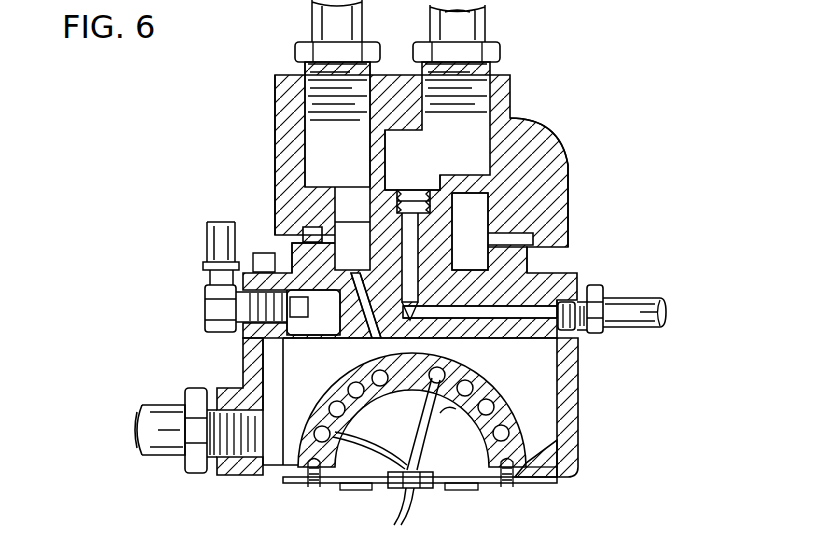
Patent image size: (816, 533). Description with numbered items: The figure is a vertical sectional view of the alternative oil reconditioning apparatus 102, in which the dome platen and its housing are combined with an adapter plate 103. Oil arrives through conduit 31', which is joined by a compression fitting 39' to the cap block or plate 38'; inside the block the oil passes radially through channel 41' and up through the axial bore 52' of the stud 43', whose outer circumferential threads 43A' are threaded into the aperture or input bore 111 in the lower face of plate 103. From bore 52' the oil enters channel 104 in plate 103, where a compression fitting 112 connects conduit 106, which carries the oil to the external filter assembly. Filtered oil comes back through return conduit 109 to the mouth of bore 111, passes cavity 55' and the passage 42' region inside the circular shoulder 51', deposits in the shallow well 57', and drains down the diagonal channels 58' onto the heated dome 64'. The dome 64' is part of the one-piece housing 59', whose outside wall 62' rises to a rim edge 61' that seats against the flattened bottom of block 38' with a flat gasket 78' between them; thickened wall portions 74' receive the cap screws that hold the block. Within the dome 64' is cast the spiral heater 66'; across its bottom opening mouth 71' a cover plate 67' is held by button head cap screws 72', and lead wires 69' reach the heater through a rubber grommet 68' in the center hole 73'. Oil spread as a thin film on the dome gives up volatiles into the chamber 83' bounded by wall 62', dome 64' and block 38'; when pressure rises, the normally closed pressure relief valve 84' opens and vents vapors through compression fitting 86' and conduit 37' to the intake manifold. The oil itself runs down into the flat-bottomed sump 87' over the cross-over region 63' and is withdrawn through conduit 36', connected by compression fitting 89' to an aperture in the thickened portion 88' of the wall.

The alternative apparatus 102 is at (556, 78).
The adapter plate 103 is at (275, 125).
The channel 104 is at (468, 140).
The conduit 106 is at (462, 28).
The return conduit 109 is at (322, 18).
The aperture or input bore 111 is at (317, 127).
The compression fitting 112 is at (492, 52).
The outer circumferential threads 43A' is at (412, 160).
The axial bore 52' is at (413, 193).
The cavity 55' is at (278, 223).
The conduit 37' is at (196, 253).
The well 57' is at (355, 291).
The stud 43' is at (470, 231).
The circular shoulder 51' is at (532, 256).
The cap block or plate 38' is at (584, 278).
The compression fitting 39' is at (614, 290).
The conduit 31' is at (648, 292).
The compression fitting 86' is at (209, 307).
The pressure relief valve 84' is at (314, 312).
The rim edge 61' is at (228, 394).
The thickened wall portions 74' is at (228, 406).
The channels 58' is at (349, 323).
The passage 42' is at (480, 335).
The channel 41' is at (410, 222).
The flat gasket 78' is at (601, 332).
The housing 59' is at (417, 426).
The conduit 36' is at (131, 425).
The thickened portion 88' is at (188, 412).
The outside wall 62' is at (598, 407).
The chamber 83' is at (479, 386).
The sump 87' is at (582, 451).
The dome 64' is at (412, 410).
The heater 66' is at (402, 438).
The rubber grommet 68' is at (435, 433).
The compression fitting 89' is at (178, 444).
The cap screws 72' is at (417, 492).
The bottom opening mouth 71' is at (349, 506).
The lead wires 69' is at (388, 506).
The center hole 73' is at (452, 504).
The cover plate 67' is at (506, 493).
The cross-over region 63' is at (565, 474).